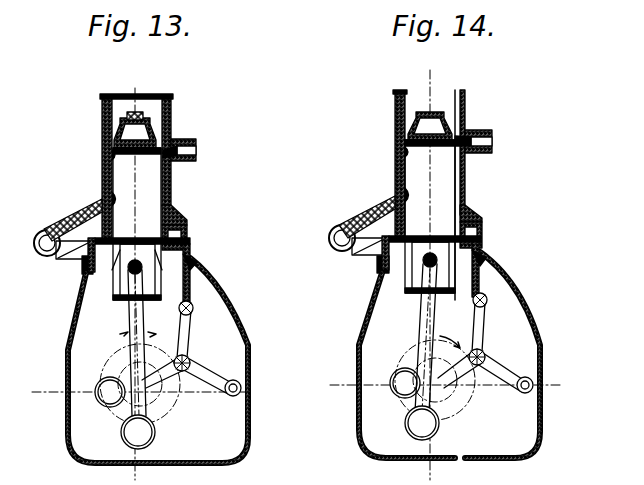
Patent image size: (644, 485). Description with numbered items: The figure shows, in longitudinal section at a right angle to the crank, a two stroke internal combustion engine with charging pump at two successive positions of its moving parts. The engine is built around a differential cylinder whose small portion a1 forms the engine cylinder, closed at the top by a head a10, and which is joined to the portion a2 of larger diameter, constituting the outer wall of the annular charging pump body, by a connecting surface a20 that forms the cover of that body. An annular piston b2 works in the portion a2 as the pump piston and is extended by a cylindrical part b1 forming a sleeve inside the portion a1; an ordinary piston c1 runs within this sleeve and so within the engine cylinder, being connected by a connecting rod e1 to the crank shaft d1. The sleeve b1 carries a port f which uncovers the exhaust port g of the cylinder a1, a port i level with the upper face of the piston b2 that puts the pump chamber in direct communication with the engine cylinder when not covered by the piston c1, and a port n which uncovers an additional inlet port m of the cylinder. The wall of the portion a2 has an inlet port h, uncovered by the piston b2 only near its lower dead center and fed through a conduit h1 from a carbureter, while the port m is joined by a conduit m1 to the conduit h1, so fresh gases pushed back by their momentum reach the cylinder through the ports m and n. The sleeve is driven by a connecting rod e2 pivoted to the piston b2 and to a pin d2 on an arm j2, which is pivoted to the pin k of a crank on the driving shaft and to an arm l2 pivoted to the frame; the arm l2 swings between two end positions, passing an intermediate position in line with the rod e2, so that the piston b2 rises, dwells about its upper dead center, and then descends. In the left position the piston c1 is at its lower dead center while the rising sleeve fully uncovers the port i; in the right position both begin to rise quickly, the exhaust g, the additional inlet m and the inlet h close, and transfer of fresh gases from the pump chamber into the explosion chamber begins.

In FIG. 13, the small portion of the differential cylinder a1 is at (172, 101).
In FIG. 14, the small portion of the differential cylinder a1 is at (466, 106).
In FIG. 13, the portion of larger diameter of the differential cylinder a2 is at (188, 238).
In FIG. 14, the portion of larger diameter of the differential cylinder a2 is at (483, 230).
In FIG. 13, the head a10 is at (150, 126).
In FIG. 14, the head a10 is at (440, 100).
In FIG. 13, the connecting surface a20 is at (178, 214).
In FIG. 14, the connecting surface a20 is at (470, 205).
In FIG. 13, the cylindrical part (sleeve) b1 is at (108, 152).
In FIG. 14, the cylindrical part (sleeve) b1 is at (400, 148).
In FIG. 13, the annular piston b2 is at (187, 285).
In FIG. 14, the annular piston b2 is at (496, 268).
In FIG. 13, the ordinary piston c1 is at (132, 330).
In FIG. 14, the ordinary piston c1 is at (416, 288).
In FIG. 13, the crank shaft d1 is at (156, 432).
In FIG. 14, the crank shaft d1 is at (405, 428).
In FIG. 13, the pin d2 is at (190, 364).
In FIG. 14, the pin d2 is at (500, 345).
In FIG. 13, the connecting rod e1 is at (110, 345).
In FIG. 14, the connecting rod e1 is at (420, 336).
In FIG. 13, the connecting rod e2 is at (192, 332).
In FIG. 14, the connecting rod e2 is at (490, 322).
In FIG. 13, the port f is at (172, 166).
In FIG. 14, the port f is at (470, 132).
In FIG. 13, the exhaust port g is at (196, 148).
In FIG. 14, the exhaust port g is at (492, 148).
In FIG. 13, the inlet port h is at (82, 282).
In FIG. 14, the inlet port h is at (380, 276).
In FIG. 13, the conduit h1 is at (62, 254).
In FIG. 14, the conduit h1 is at (358, 256).
In FIG. 13, the port i is at (137, 224).
In FIG. 14, the port i is at (446, 216).
In FIG. 13, the arm j2 is at (240, 396).
In FIG. 14, the arm j2 is at (524, 394).
In FIG. 14, the pin of a crank k is at (390, 384).
In FIG. 13, the arm l2 is at (238, 374).
In FIG. 14, the arm l2 is at (540, 432).
In FIG. 13, the additional inlet port m is at (104, 216).
In FIG. 14, the additional inlet port m is at (400, 212).
In FIG. 13, the conduit m1 is at (66, 230).
In FIG. 14, the conduit m1 is at (362, 226).
In FIG. 13, the port n is at (110, 182).
In FIG. 14, the port n is at (404, 178).